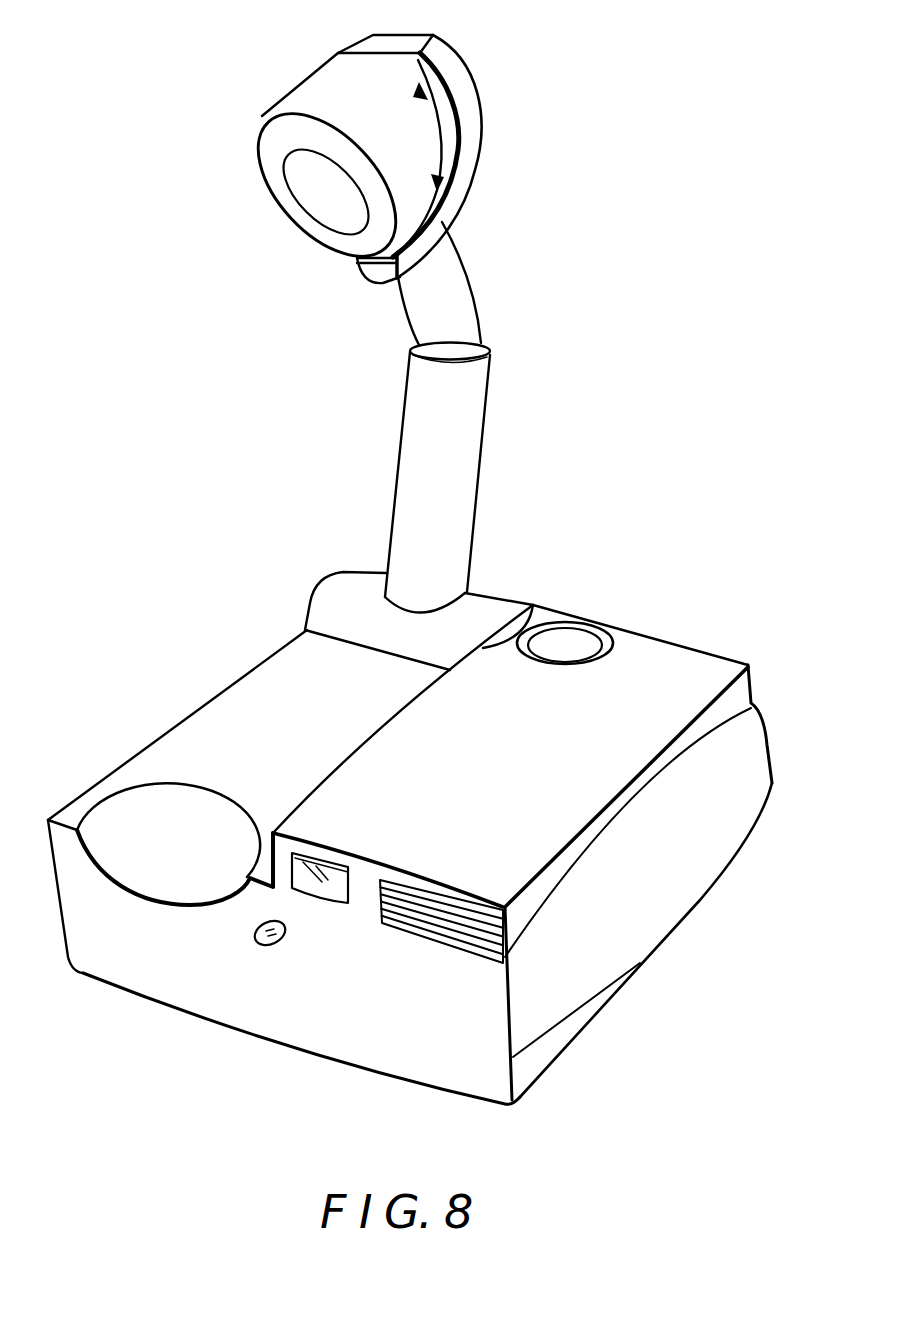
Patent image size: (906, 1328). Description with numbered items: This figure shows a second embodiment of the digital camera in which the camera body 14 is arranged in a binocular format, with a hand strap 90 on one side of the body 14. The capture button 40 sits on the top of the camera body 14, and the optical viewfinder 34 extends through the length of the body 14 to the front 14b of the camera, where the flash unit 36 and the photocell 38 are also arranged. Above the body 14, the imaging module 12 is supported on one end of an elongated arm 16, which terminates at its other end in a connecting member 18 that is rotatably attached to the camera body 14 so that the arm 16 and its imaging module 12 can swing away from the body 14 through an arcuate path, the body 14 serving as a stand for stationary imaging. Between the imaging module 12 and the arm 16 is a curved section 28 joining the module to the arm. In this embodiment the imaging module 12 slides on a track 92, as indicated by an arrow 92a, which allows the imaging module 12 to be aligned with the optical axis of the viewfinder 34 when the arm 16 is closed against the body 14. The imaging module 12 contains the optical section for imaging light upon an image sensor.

The imaging module 12 is at (307, 93).
The track 92 is at (458, 90).
The arrow 92a is at (440, 138).
The gooseneck arm 28 is at (445, 297).
The elongated arm 16 is at (453, 460).
The connecting member 18 is at (473, 610).
The capture button 40 is at (570, 642).
The camera body 14 is at (677, 667).
The front 14b is at (123, 972).
The hand strap 90 is at (705, 835).
The optical viewfinder 34 is at (330, 895).
The flash unit 36 is at (450, 932).
The photocell 38 is at (267, 943).